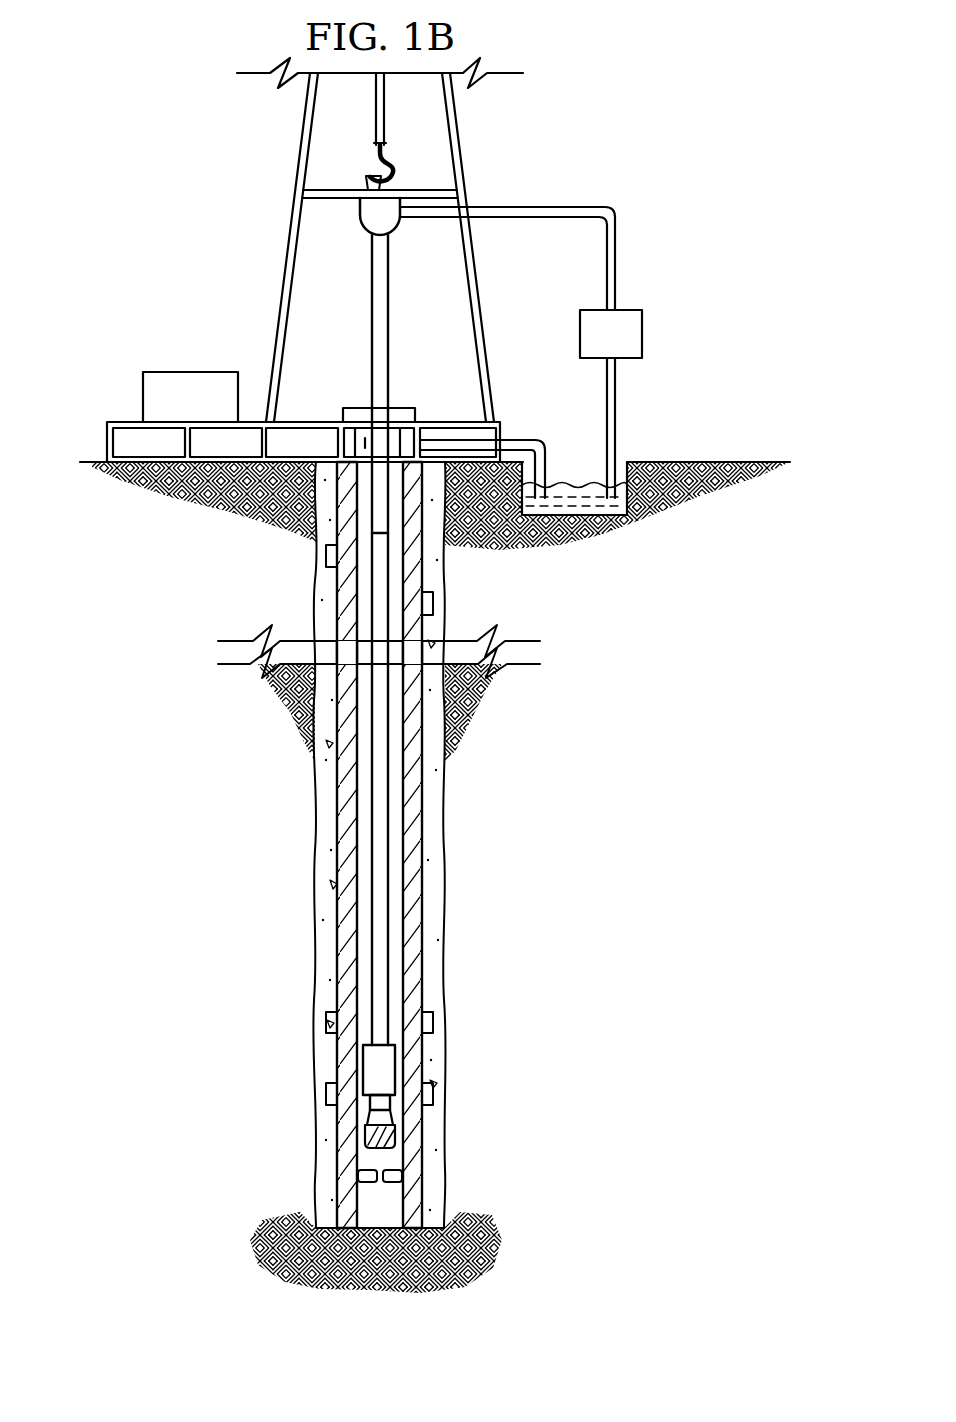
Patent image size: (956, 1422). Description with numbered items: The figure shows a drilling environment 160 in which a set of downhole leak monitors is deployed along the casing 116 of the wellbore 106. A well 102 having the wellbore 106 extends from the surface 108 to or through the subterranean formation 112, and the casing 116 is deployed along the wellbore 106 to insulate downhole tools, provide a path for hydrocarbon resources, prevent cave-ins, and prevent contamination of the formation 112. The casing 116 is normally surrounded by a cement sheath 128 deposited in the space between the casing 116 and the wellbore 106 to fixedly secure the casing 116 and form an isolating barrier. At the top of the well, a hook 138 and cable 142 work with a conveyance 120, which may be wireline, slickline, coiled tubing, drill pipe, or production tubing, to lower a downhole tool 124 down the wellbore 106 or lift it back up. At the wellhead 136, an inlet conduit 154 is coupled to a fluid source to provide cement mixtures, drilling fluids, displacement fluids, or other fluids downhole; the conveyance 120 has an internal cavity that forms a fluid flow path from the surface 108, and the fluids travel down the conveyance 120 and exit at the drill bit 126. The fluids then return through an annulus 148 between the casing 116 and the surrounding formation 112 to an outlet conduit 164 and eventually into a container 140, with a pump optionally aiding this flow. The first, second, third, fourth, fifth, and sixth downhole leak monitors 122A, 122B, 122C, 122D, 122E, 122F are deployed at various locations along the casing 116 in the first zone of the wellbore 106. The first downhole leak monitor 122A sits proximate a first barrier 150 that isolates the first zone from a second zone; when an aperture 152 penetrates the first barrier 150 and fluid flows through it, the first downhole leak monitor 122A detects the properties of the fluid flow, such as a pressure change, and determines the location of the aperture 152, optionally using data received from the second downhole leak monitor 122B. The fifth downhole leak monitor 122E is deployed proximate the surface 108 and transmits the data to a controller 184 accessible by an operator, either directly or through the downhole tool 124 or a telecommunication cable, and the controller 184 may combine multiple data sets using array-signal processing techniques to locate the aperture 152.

The well 102 is at (410, 392).
The wellbore 106 is at (446, 828).
The surface 108 is at (721, 462).
The subterranean formation 112 is at (648, 760).
The casing 116 is at (416, 905).
The conveyance 120 is at (371, 825).
The first downhole leak monitor 122A is at (433, 1094).
The second downhole leak monitor 122B is at (326, 1094).
The third downhole leak monitor 122C is at (433, 1022).
The fourth downhole leak monitor 122D is at (326, 1022).
The fifth downhole leak monitor 122E is at (433, 601).
The sixth downhole leak monitor 122F is at (326, 553).
The downhole tool 124 is at (363, 1072).
The drill bit 126 is at (367, 1137).
The cement sheath 128 is at (440, 778).
The wellhead 136 is at (357, 408).
The hook 138 is at (398, 173).
The container 140 is at (568, 513).
The cable 142 is at (375, 133).
The annulus 148 is at (360, 945).
The first barrier 150 is at (360, 1178).
The aperture 152 is at (402, 1176).
The inlet conduit 154 is at (582, 207).
The drilling environment 160 is at (226, 222).
The outlet conduit 164 is at (514, 437).
The controller 184 is at (190, 372).